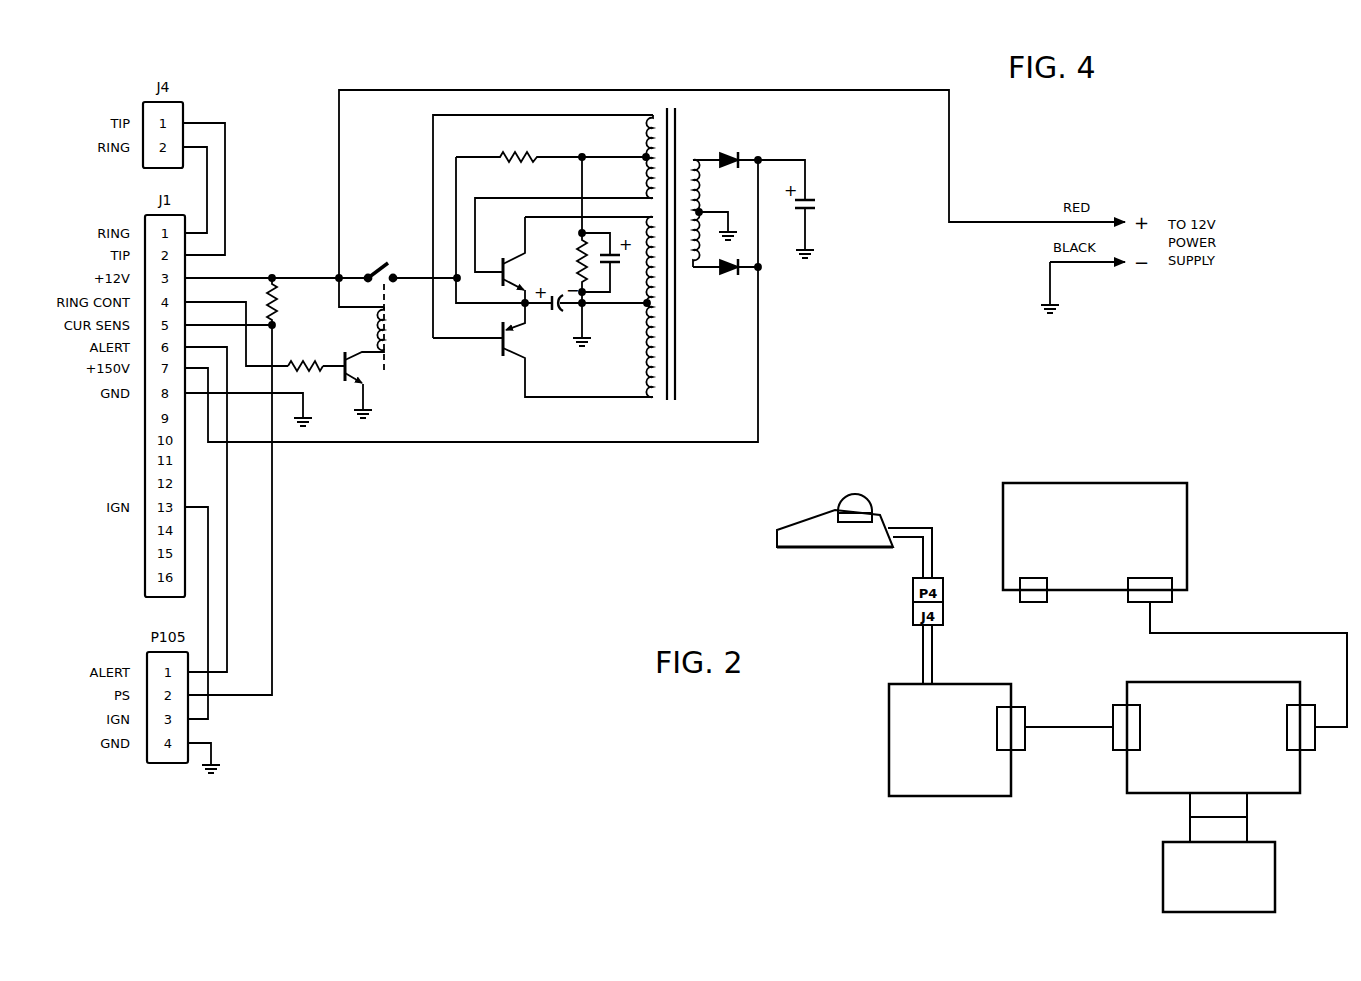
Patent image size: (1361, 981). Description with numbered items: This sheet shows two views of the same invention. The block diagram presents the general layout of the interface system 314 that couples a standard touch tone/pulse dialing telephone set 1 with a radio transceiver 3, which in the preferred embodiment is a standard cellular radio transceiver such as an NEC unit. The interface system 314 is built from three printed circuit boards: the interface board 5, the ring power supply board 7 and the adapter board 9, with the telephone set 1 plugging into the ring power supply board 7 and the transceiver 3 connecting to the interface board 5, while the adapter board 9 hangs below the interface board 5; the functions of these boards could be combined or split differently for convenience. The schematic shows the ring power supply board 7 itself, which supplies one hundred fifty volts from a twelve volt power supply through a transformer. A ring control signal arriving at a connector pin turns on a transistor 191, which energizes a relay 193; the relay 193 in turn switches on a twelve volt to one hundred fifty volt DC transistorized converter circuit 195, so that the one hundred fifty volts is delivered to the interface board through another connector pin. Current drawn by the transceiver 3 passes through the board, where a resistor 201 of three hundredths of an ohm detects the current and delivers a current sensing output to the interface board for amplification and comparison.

In FIG. 4, the relay 193 is at (376, 262).
In FIG. 4, the resistor 201 is at (273, 313).
In FIG. 4, the transistor 191 is at (372, 372).
In FIG. 4, the transistorized converter circuit 195 is at (628, 407).
In FIG. 2, the telephone set 1 is at (878, 516).
In FIG. 2, the radio transceiver 3 is at (1180, 525).
In FIG. 2, the ring power supply board 7 is at (895, 772).
In FIG. 2, the interface board 5 is at (1295, 772).
In FIG. 2, the adapter board 9 is at (1270, 882).
In FIG. 2, the interface system 314 is at (1150, 880).